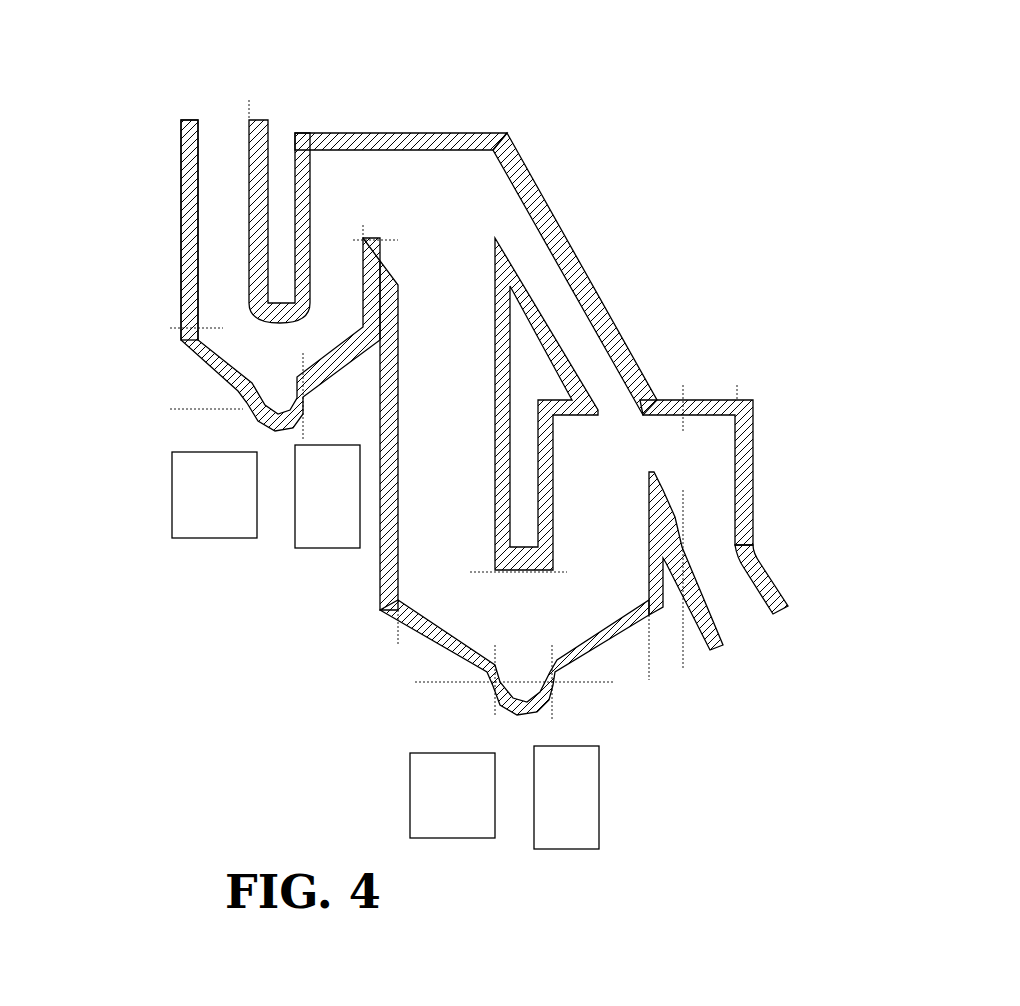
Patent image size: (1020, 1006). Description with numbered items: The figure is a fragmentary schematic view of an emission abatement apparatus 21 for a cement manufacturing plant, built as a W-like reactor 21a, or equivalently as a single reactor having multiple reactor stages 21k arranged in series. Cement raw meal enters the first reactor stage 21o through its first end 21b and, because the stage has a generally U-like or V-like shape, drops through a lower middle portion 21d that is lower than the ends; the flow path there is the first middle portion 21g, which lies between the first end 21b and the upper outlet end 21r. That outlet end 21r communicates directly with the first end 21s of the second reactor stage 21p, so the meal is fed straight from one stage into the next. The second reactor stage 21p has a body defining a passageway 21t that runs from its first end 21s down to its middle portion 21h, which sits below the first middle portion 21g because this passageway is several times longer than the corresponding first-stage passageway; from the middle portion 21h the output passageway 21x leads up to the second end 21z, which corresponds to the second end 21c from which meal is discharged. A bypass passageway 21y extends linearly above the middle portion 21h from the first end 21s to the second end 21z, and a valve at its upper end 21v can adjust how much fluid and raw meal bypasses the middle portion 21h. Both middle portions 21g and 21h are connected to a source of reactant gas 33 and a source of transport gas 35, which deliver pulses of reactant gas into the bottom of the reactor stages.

The emission abatement apparatus 21 is at (708, 237).
The reactor 21a is at (708, 150).
The first end 21b is at (218, 141).
The second end 21c is at (743, 613).
The lower middle portion 21d is at (243, 402).
The first middle portion 21g is at (218, 413).
The middle portion of second reactor stage 21h is at (570, 688).
The reactor stage 21k is at (147, 296).
The first reactor stage 21o is at (147, 235).
The second reactor stage 21p is at (638, 318).
The upper outlet end 21r is at (337, 297).
The first end of second reactor stage 21s is at (362, 170).
The passageway 21t is at (447, 473).
The upper end of bypass passageway 21v is at (455, 200).
The output passageway 21x is at (625, 525).
The bypass passageway 21y is at (560, 290).
The second end of second reactor stage 21z is at (636, 443).
The source of reactant gas 33 is at (250, 417).
The source of transport gas 35 is at (321, 405).